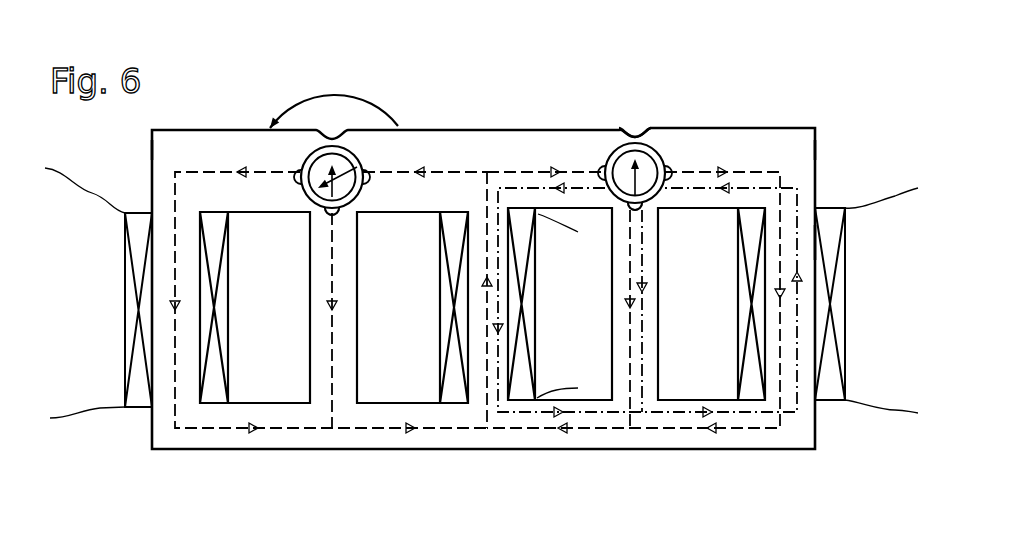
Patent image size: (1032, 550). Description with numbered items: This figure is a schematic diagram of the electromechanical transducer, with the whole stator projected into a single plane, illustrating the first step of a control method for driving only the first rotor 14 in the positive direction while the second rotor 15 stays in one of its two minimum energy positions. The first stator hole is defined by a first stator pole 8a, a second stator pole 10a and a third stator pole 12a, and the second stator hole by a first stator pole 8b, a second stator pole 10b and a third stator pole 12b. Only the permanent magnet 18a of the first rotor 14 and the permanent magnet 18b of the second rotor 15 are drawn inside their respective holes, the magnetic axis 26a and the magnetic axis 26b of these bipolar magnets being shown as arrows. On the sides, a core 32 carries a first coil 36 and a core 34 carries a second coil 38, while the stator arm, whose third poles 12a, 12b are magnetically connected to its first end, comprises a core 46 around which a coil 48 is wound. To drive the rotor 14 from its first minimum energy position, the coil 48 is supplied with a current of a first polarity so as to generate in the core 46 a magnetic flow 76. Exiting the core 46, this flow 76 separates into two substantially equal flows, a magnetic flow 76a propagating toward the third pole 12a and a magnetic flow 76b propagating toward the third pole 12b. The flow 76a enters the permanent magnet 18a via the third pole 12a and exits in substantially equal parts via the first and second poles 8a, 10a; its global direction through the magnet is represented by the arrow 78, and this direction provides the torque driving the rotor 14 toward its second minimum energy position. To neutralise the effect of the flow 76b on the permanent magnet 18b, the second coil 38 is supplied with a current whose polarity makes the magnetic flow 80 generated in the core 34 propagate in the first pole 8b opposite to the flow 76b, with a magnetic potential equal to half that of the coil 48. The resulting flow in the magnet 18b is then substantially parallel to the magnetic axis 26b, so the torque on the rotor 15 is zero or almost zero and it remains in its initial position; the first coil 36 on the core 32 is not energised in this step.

The first stator pole 8a is at (243, 155).
The first stator pole 8b is at (707, 153).
The second stator pole 10a is at (317, 214).
The second stator pole 10b is at (620, 257).
The third stator pole 12a is at (408, 162).
The third stator pole 12b is at (555, 170).
The first rotor 14 is at (300, 153).
The second rotor 15 is at (608, 148).
The permanent magnet 18a is at (358, 192).
The permanent magnet 18b is at (645, 172).
The magnetic axis 26a is at (355, 155).
The magnetic axis 26b is at (655, 144).
The core 32 is at (162, 258).
The core 34 is at (805, 243).
The first coil 36 is at (150, 307).
The second coil 38 is at (830, 350).
The core 46 is at (475, 360).
The coil 48 is at (445, 327).
The magnetic flow 76 is at (485, 282).
The magnetic flow 76a is at (423, 170).
The magnetic flow 76b is at (577, 153).
The arrow 78 is at (322, 252).
The magnetic flow 80 is at (800, 277).